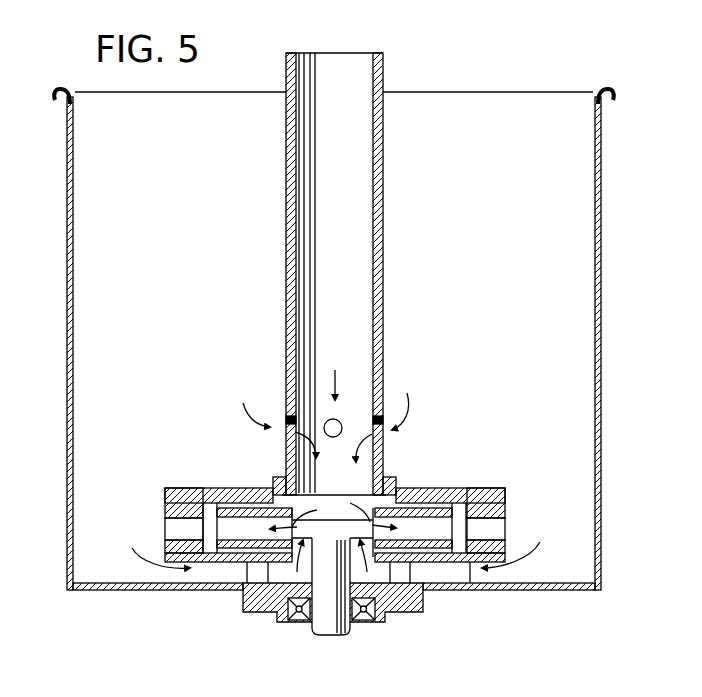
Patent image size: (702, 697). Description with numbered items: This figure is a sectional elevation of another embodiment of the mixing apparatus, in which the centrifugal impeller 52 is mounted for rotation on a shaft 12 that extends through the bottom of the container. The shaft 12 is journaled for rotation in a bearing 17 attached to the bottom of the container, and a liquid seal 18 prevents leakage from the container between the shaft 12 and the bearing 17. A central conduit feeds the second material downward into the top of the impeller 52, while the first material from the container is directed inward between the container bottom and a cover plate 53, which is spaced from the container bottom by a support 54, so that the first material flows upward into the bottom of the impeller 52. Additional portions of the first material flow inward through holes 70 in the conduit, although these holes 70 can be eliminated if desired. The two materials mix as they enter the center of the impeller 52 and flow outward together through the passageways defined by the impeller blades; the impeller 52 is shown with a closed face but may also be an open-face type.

The holes 70 is at (284, 421).
The impeller 52 is at (428, 508).
The liquid seal 18 is at (357, 588).
The support 54 is at (248, 570).
The cover plate 53 is at (433, 560).
The bearing 17 is at (295, 622).
The shaft 12 is at (330, 630).